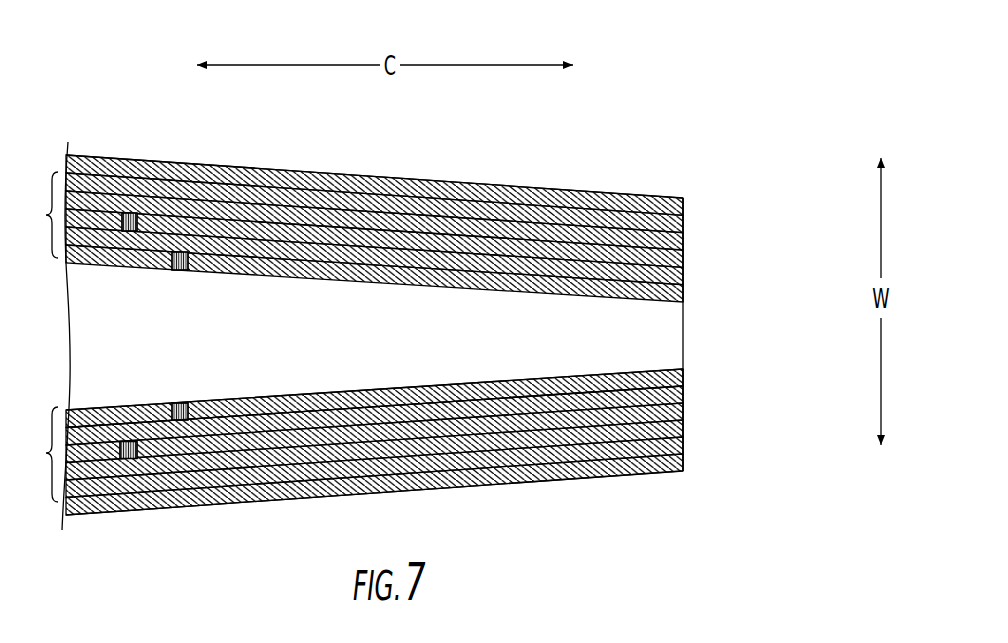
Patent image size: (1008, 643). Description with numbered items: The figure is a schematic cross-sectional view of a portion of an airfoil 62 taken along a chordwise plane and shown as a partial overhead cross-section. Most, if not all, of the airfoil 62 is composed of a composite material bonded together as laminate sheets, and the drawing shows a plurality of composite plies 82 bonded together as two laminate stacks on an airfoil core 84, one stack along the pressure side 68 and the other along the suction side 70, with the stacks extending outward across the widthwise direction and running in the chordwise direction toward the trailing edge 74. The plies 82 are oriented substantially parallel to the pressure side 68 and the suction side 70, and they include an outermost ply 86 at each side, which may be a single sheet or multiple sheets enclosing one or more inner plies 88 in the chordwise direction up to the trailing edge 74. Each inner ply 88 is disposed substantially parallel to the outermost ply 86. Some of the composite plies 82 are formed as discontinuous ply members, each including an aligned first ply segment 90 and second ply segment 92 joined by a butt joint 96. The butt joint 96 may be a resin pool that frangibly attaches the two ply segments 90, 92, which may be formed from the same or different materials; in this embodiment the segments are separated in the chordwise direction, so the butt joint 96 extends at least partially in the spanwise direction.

The airfoil 62 is at (688, 126).
The pressure side 68 is at (362, 160).
The suction side 70 is at (377, 510).
The trailing edge 74 is at (746, 314).
The composite plies 82 is at (684, 207).
The airfoil core 84 is at (430, 348).
The outermost ply 86 is at (637, 198).
The inner plies 88 is at (39, 337).
The first ply segment 90 is at (295, 396).
The second ply segment 92 is at (145, 404).
The butt joint 96 is at (184, 403).